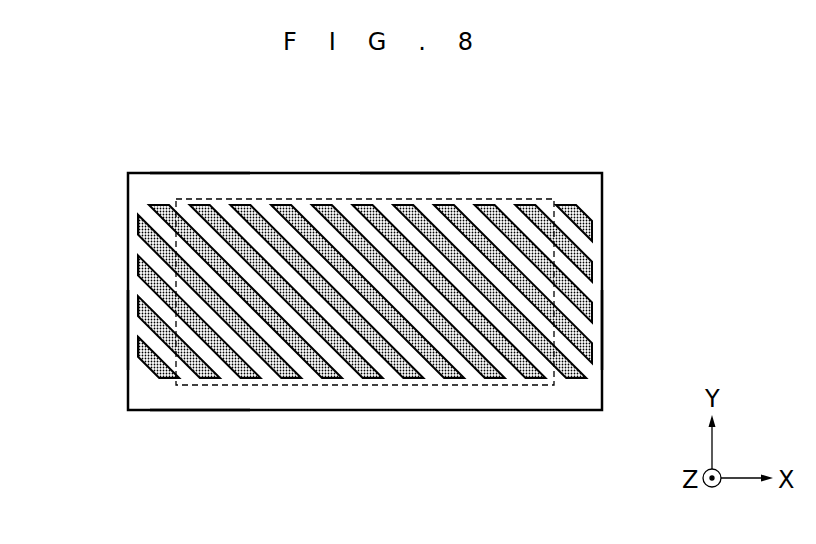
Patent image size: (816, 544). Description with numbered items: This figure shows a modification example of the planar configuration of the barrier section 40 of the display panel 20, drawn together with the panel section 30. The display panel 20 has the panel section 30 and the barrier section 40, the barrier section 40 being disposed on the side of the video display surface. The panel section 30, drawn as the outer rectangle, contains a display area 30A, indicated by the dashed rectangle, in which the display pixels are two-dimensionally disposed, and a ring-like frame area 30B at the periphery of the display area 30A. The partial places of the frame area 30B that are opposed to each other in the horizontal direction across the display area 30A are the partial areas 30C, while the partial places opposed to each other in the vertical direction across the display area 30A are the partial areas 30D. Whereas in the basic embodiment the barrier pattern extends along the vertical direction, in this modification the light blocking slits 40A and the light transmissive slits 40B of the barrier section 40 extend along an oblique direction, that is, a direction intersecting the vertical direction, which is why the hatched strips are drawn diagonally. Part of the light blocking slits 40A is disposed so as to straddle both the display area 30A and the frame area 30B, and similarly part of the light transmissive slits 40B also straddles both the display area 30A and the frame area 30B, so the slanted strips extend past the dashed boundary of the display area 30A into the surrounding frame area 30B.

The display panel 20 is at (652, 153).
The panel section 30 is at (604, 200).
The display area 30A is at (488, 195).
The frame area 30B is at (408, 185).
The partial area 30C is at (146, 333).
The partial area 30D is at (200, 186).
The barrier section 40 is at (517, 465).
The light blocking slit 40A is at (418, 377).
The light transmissive slit 40B is at (485, 341).